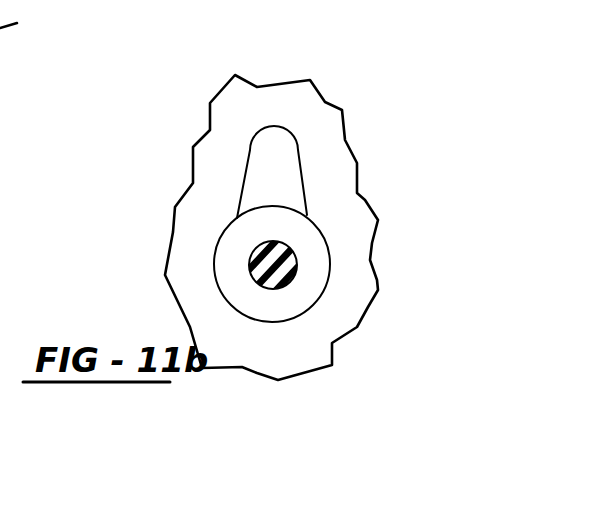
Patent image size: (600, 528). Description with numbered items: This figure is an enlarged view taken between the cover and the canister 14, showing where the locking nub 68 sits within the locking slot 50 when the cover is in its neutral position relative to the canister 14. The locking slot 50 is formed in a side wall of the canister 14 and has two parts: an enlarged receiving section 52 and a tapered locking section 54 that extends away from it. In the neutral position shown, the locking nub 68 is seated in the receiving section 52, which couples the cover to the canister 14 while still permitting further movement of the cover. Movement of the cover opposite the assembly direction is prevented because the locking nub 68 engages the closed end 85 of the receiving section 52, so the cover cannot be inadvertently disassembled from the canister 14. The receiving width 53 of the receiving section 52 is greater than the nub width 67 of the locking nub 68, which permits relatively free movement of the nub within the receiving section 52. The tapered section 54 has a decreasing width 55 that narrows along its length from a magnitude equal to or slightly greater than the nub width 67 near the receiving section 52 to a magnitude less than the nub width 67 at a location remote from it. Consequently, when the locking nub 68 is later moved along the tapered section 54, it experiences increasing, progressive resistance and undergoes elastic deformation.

The canister 14 is at (287, 97).
The tapered locking section 54 is at (282, 138).
The decreasing width 55 is at (342, 174).
The nub width 67 is at (336, 222).
The locking slot 50 is at (350, 221).
The locking nub 68 is at (258, 282).
The receiving section 52 is at (316, 270).
The closed end 85 is at (273, 318).
The receiving width 53 is at (323, 340).